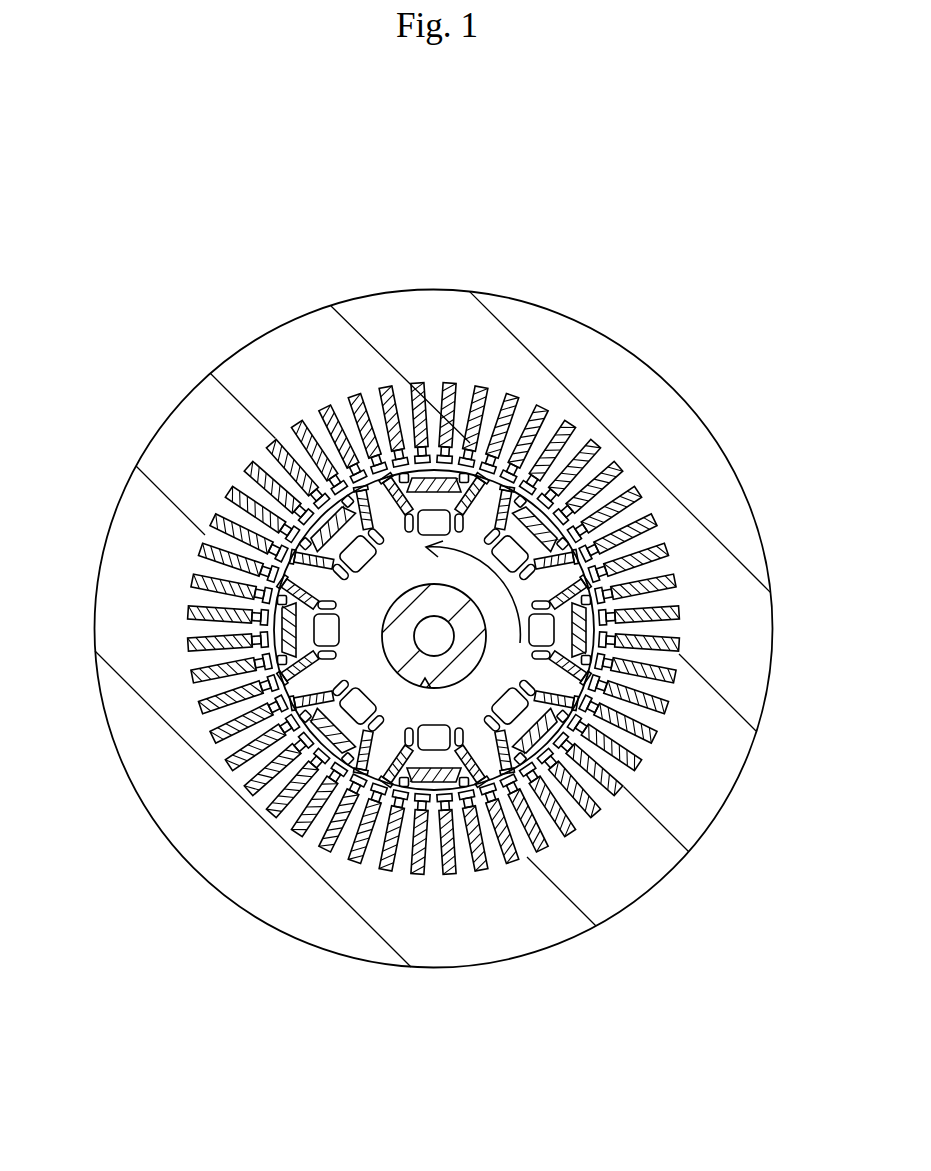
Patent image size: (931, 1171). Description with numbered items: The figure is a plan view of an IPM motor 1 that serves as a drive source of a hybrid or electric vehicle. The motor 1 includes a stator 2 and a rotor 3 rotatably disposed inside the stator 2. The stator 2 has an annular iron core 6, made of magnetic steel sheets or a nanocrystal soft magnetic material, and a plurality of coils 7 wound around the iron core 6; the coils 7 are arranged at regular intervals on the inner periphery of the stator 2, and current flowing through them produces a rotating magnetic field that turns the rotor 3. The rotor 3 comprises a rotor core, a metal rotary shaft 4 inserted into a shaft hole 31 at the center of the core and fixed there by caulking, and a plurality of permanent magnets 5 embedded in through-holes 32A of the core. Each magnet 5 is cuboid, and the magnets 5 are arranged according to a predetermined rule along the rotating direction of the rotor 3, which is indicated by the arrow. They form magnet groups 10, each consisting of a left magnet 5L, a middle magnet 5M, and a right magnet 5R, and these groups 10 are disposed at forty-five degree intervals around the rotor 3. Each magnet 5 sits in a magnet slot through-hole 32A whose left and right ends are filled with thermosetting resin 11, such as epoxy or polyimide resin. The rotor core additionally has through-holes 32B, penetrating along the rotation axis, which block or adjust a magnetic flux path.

The IPM motor 1 is at (751, 216).
The stator 2 is at (213, 372).
The rotor 3 is at (503, 586).
The rotary shaft 4 is at (545, 789).
The magnet 5 is at (640, 662).
The left magnet 5L is at (385, 479).
The middle magnet 5M is at (440, 484).
The right magnet 5R is at (477, 498).
The iron core 6 is at (170, 437).
The coil 7 is at (240, 466).
The magnet group 10 is at (527, 363).
The resin 11 is at (409, 518).
The shaft hole 31 is at (426, 682).
The through-hole 32A is at (492, 502).
The through-hole 32B is at (442, 527).